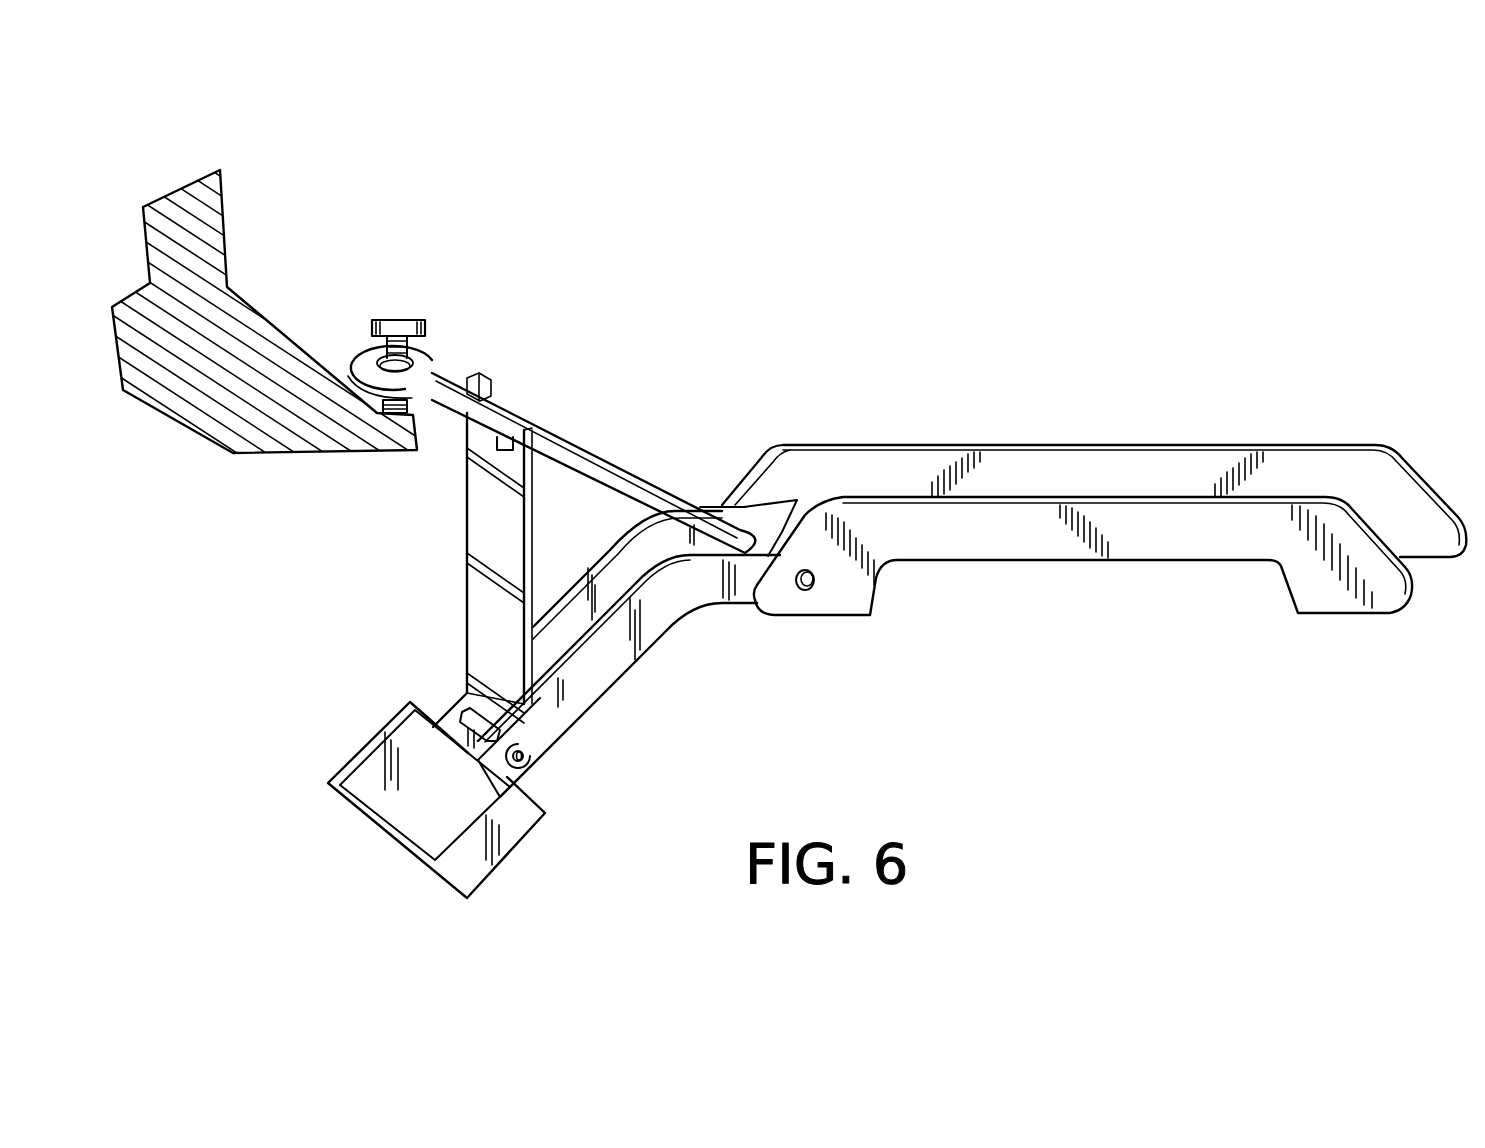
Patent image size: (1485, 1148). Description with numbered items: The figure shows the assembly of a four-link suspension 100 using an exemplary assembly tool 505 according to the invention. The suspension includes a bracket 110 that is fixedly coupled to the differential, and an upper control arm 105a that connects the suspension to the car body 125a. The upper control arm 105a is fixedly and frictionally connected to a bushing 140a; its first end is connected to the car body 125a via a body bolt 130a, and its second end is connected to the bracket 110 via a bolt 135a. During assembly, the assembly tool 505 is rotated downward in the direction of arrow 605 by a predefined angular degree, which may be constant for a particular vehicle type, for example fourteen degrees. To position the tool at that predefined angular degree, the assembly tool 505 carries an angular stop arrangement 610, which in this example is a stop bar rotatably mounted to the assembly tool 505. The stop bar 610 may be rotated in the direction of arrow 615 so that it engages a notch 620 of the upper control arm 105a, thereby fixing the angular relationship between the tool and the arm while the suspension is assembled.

The four-link suspension 100 is at (1290, 215).
The upper control arm 105a is at (600, 453).
The bracket 110 is at (1135, 528).
The car body 125a is at (207, 237).
The body bolt 130a is at (392, 317).
The bolt 135a is at (815, 587).
The bushing 140a is at (760, 497).
The assembly tool 505 is at (673, 602).
The arrow 605 is at (418, 542).
The angular stop arrangement 610 is at (478, 500).
The arrow 615 is at (534, 748).
The notch 620 is at (498, 427).